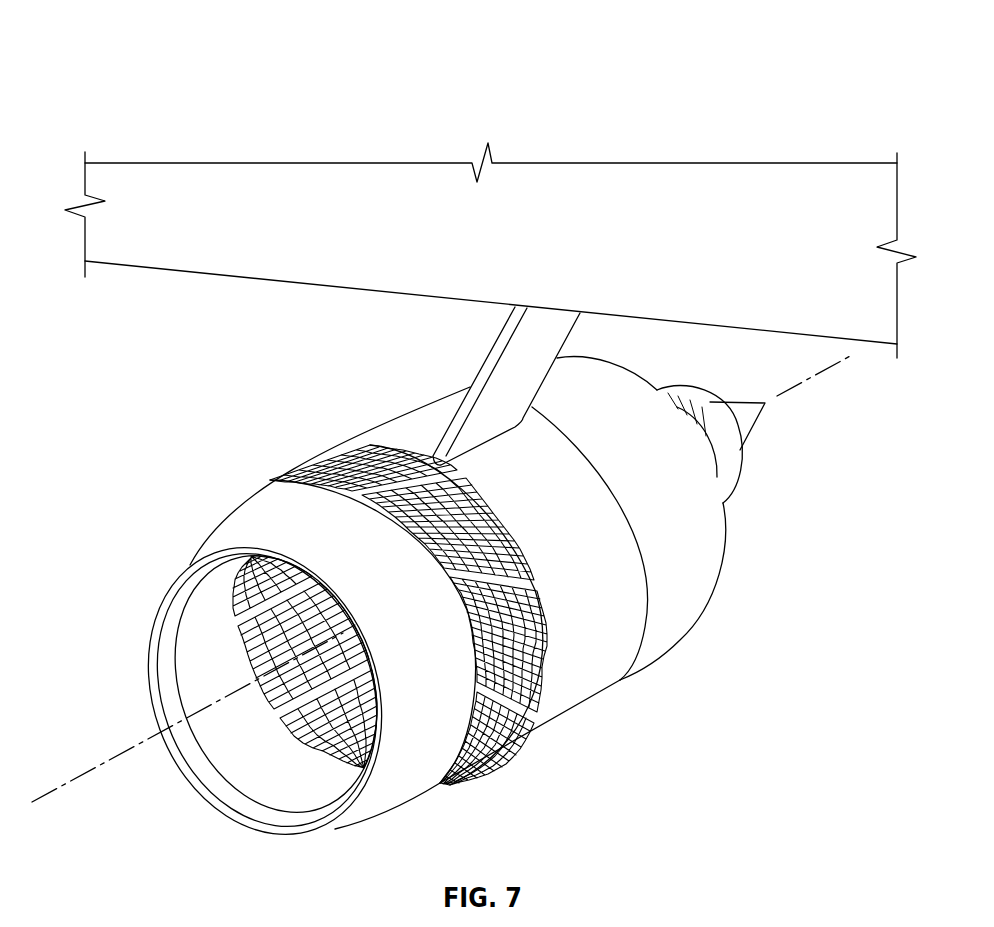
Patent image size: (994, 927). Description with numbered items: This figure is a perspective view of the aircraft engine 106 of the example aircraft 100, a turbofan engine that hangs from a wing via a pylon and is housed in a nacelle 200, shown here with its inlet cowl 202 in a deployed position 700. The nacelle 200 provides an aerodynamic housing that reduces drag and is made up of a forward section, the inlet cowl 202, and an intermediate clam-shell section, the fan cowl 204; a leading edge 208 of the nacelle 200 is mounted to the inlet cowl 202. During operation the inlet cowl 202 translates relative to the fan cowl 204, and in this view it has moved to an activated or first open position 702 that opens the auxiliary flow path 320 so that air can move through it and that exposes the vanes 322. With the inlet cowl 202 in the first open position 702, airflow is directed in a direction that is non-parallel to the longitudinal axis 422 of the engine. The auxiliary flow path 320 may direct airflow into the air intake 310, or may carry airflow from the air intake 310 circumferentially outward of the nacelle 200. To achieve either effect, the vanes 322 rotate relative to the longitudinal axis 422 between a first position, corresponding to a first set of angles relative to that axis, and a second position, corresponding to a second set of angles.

The aircraft 100 is at (160, 54).
The aircraft engine 106 is at (285, 378).
The nacelle 200 is at (338, 427).
The inlet cowl 202 is at (397, 790).
The fan cowl 204 is at (578, 693).
The leading edge 208 is at (195, 762).
The air intake 310 is at (198, 667).
The auxiliary flow path 320 is at (552, 635).
The vanes 322 is at (522, 735).
The longitudinal axis 422 is at (787, 392).
The deployed position 700 is at (523, 805).
The first open position 702 is at (270, 478).